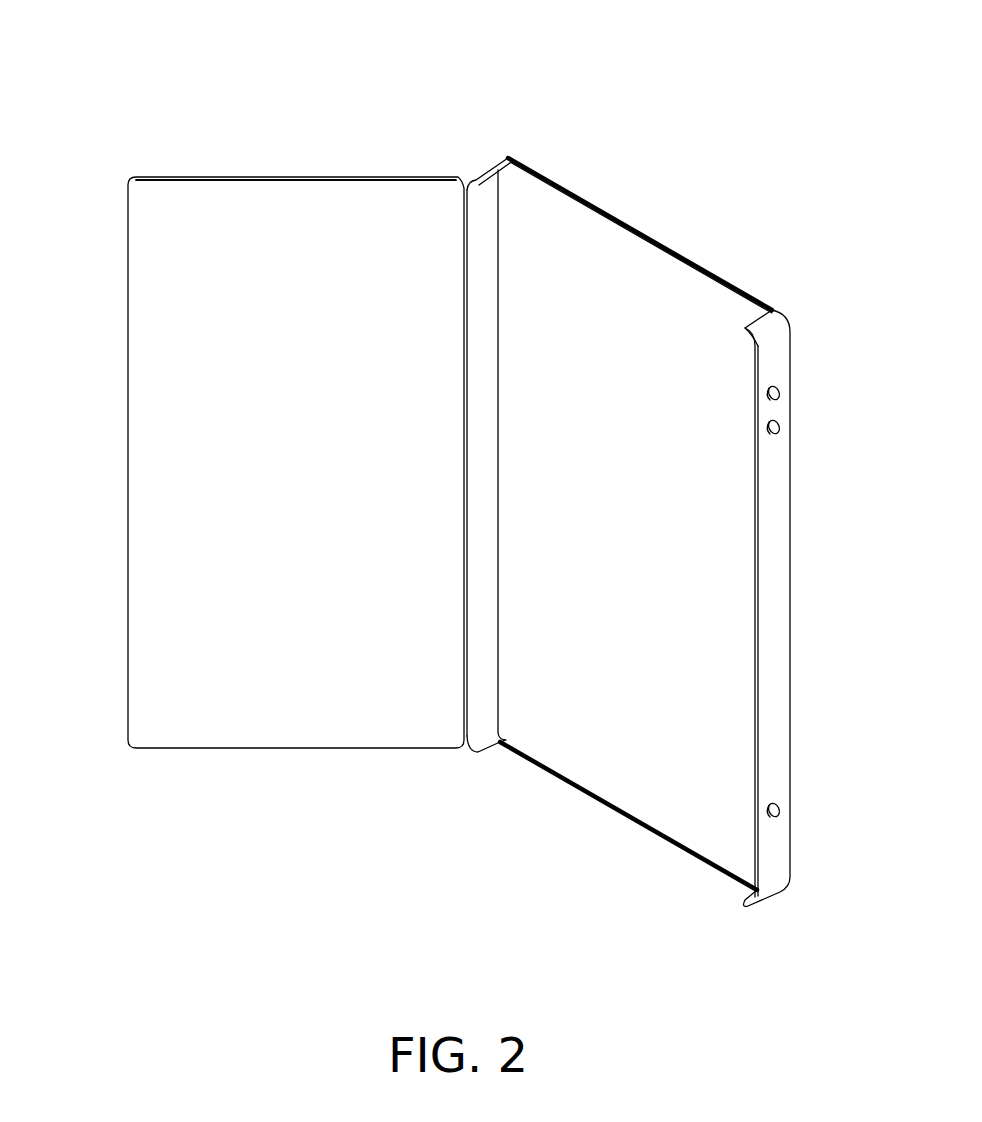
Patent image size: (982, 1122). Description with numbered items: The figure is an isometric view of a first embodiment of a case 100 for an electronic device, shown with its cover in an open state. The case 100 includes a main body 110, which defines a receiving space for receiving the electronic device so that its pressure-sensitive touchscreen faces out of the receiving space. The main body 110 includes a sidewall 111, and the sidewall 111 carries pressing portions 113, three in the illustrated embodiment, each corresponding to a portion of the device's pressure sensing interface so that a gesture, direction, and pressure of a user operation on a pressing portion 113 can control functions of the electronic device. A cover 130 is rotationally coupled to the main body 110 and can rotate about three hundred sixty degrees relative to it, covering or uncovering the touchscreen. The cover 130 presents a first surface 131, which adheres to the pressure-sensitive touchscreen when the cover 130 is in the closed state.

The case 100 is at (472, 29).
The main body 110 is at (630, 225).
The sidewall 111 is at (770, 530).
The pressing portion 113 is at (781, 394).
The cover 130 is at (127, 266).
The first surface 131 is at (212, 200).